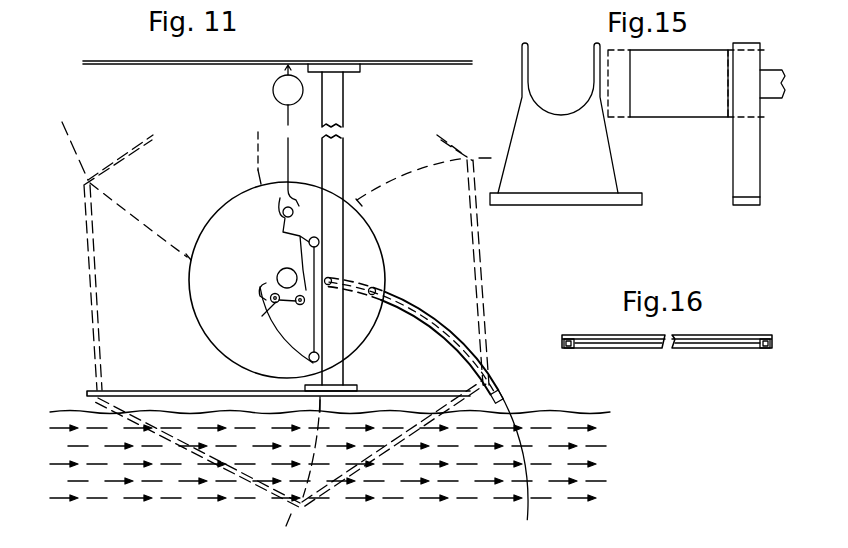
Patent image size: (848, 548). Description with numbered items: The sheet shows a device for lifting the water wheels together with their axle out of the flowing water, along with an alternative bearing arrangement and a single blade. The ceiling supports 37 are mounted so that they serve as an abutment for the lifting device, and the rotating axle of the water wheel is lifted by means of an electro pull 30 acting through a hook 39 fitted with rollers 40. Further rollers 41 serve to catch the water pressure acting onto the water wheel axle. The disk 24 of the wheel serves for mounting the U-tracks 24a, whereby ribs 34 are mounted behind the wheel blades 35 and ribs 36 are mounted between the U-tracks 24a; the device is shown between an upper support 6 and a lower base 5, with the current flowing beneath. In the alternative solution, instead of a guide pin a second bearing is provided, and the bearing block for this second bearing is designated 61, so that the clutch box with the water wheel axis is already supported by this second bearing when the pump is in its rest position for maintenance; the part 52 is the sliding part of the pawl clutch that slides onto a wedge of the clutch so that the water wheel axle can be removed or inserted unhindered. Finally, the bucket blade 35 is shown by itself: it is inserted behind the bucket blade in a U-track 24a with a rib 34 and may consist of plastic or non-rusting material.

In FIG. 11, the base plate 5 is at (417, 390).
In FIG. 11, the top plate 6 is at (228, 64).
In FIG. 11, the disk 24 is at (372, 255).
In FIG. 11, the U-track 24a is at (504, 404).
In FIG. 16, the U-track 24a is at (570, 350).
In FIG. 11, the electro pull 30 is at (296, 90).
In FIG. 11, the rib 34 is at (493, 388).
In FIG. 16, the rib 34 is at (582, 333).
In FIG. 11, the bucket blade 35 is at (503, 418).
In FIG. 16, the bucket blade 35 is at (638, 347).
In FIG. 11, the rib 36 is at (481, 280).
In FIG. 11, the ceiling support 37 is at (332, 158).
In FIG. 11, the hook 39 is at (297, 335).
In FIG. 11, the roller 40 is at (291, 305).
In FIG. 11, the roller 41 is at (320, 358).
In FIG. 15, the sliding part of the pawl clutch 52 is at (686, 103).
In FIG. 15, the bearing block for the second bearing 61 is at (743, 167).